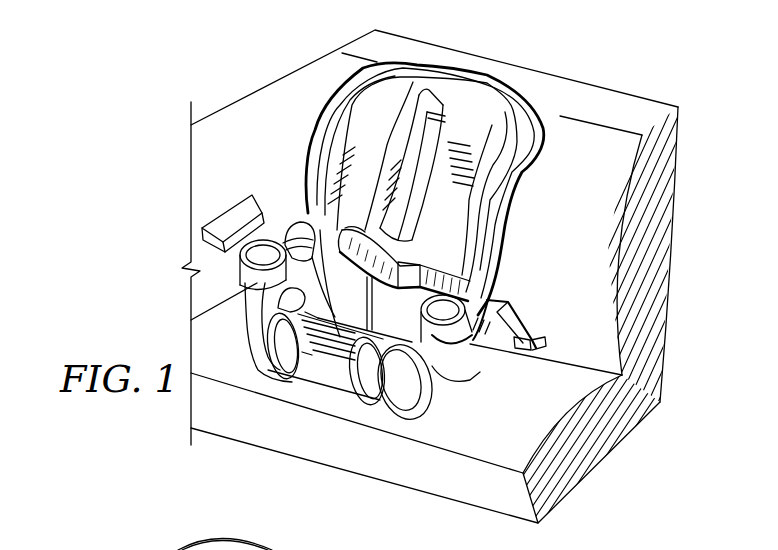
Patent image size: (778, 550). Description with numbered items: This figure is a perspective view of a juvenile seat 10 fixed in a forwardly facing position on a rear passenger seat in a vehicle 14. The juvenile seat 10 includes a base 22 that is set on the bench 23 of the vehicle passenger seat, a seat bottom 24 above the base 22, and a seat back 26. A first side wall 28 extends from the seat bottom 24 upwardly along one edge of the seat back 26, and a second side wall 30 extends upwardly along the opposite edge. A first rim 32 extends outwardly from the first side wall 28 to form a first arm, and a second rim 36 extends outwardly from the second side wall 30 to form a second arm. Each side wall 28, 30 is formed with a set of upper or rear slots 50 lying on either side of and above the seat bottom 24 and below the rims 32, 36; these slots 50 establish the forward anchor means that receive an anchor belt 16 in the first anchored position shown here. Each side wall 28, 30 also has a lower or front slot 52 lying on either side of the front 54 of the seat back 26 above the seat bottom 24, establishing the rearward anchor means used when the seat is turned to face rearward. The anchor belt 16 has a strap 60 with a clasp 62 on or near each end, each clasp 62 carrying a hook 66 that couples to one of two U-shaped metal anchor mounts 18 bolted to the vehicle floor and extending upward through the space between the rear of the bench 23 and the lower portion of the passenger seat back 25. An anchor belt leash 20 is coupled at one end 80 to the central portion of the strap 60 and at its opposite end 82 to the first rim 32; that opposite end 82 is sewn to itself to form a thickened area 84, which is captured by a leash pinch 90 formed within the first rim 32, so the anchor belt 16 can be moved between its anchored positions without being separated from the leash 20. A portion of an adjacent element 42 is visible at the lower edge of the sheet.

The juvenile seat 10 is at (487, 76).
The vehicle 14 is at (245, 128).
The anchor belt 16 is at (418, 255).
The anchor mounts 18 is at (544, 336).
The anchor belt leash 20 is at (432, 372).
The base 22 is at (472, 383).
The bench 23 is at (499, 436).
The seat bottom 24 is at (302, 287).
The passenger seat back 25 is at (577, 240).
The seat back 26 is at (487, 137).
The first side wall 28 is at (352, 152).
The second side wall 30 is at (505, 224).
The first rim 32 is at (313, 170).
The second rim 36 is at (477, 256).
The base 42 is at (490, 493).
The upper slots 50 is at (348, 140).
The lower slots 52 is at (250, 316).
The front of seat back 54 is at (318, 360).
The strap 60 is at (413, 82).
The clasp 62 is at (516, 296).
The hook 66 is at (512, 318).
The end of anchor belt leash 80 is at (413, 230).
The opposite end of anchor belt leash 82 is at (317, 178).
The thickened area 84 is at (290, 220).
The leash pinch 90 is at (335, 345).